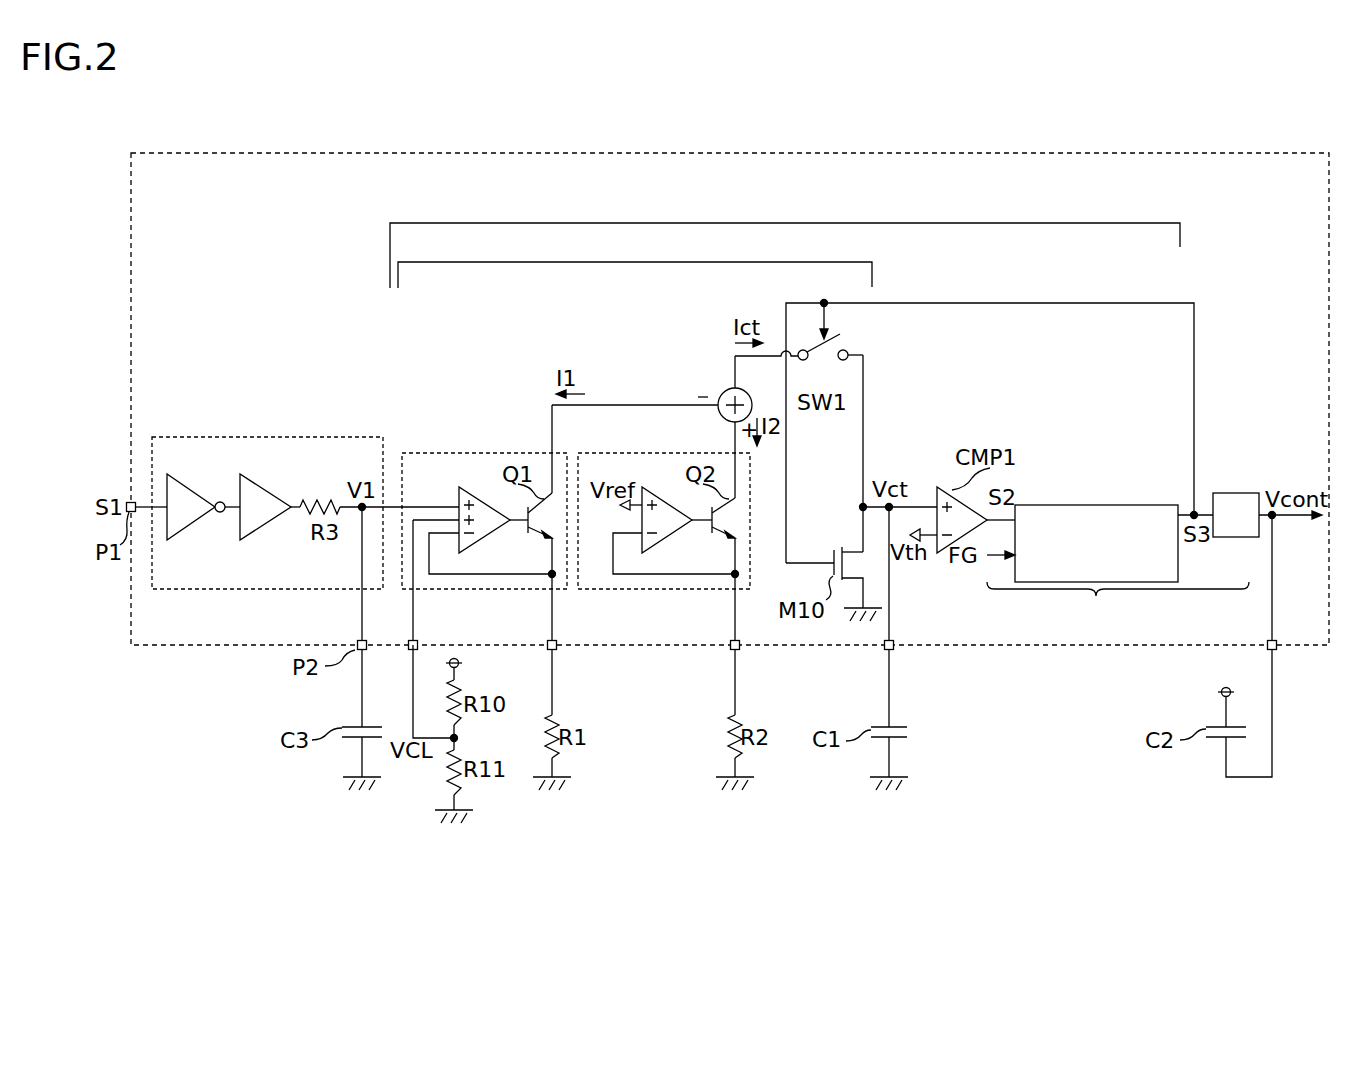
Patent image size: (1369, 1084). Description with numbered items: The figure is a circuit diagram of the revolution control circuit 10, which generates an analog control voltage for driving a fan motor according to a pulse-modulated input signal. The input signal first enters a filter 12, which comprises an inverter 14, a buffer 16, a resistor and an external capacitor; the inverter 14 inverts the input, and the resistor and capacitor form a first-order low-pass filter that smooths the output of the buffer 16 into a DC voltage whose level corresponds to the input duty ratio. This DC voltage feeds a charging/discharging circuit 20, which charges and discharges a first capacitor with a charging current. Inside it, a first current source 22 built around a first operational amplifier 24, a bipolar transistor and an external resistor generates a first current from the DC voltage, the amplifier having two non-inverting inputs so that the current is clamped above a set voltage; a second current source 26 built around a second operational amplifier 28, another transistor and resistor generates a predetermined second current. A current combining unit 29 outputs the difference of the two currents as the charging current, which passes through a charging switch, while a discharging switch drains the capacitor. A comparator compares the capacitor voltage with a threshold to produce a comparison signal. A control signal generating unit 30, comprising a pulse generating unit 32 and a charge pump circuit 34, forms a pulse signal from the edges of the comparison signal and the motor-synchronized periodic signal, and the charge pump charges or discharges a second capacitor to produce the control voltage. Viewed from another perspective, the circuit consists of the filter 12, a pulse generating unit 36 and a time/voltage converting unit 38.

The revolution control circuit 10 is at (1213, 153).
The filter 12 is at (331, 437).
The inverter 14 is at (194, 485).
The buffer 16 is at (268, 485).
The charging/discharging circuit 20 is at (645, 262).
The first current source 22 is at (482, 453).
The first operational amplifier 24 is at (490, 539).
The second current source 26 is at (657, 453).
The second operational amplifier 28 is at (673, 539).
The current combining unit 29 is at (722, 393).
The control signal generating unit 30 is at (1118, 602).
The pulse generating unit 32 is at (1127, 505).
The charge pump circuit 34 is at (1259, 496).
The pulse generating unit 36 is at (1025, 223).
The time/voltage converting unit 38 is at (1252, 478).